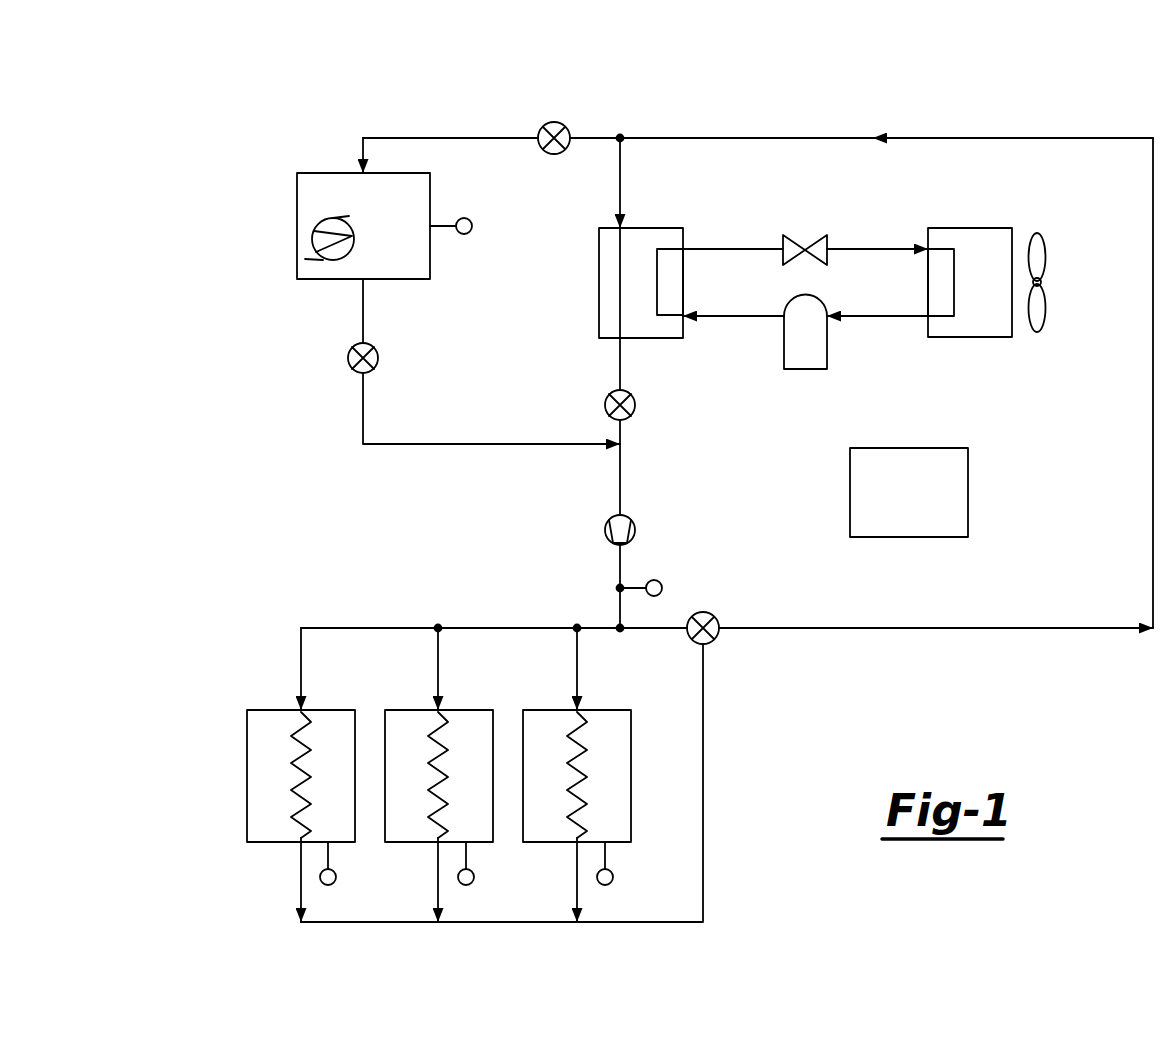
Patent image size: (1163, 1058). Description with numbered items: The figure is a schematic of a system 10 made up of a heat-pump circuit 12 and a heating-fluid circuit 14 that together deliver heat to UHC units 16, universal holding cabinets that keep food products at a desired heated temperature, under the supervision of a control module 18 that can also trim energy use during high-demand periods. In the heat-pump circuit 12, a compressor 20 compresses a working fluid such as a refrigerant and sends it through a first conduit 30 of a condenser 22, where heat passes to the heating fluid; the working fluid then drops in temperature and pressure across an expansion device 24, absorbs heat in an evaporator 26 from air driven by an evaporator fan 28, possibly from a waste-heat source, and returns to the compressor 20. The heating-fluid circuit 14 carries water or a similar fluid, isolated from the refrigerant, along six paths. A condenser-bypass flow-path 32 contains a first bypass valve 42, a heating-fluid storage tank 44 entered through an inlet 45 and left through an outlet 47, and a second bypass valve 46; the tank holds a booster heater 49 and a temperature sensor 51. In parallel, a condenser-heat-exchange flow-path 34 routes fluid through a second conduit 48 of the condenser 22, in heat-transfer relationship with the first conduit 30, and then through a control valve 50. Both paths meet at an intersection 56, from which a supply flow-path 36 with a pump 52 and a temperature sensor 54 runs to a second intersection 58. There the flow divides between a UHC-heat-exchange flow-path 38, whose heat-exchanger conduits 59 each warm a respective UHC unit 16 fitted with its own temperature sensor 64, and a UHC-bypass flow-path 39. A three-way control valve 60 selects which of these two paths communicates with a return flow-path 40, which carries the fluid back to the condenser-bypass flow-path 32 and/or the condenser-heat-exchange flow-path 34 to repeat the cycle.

The system 10 is at (305, 87).
The heat-pump circuit 12 is at (892, 347).
The heating-fluid circuit 14 is at (500, 122).
The UHC units 16 is at (247, 775).
The control module 18 is at (968, 492).
The compressor 20 is at (805, 369).
The condenser 22 is at (655, 228).
The expansion device 24 is at (800, 240).
The evaporator 26 is at (968, 228).
The evaporator fan 28 is at (1046, 305).
The first conduit 30 is at (657, 318).
The condenser-bypass flow-path 32 is at (443, 138).
The condenser-heat-exchange flow-path 34 is at (620, 182).
The supply flow-path 36 is at (620, 490).
The UHC-heat-exchange flow-path 38 is at (597, 628).
The UHC-bypass flow-path 39 is at (662, 630).
The return flow-path 40 is at (940, 628).
The first bypass valve 42 is at (553, 122).
The heating-fluid storage tank 44 is at (297, 192).
The inlet 45 is at (363, 172).
The second bypass valve 46 is at (348, 358).
The outlet 47 is at (372, 280).
The second conduit 48 is at (620, 284).
The booster heater 49 is at (312, 238).
The temperature sensor 51 is at (472, 228).
The control valve 50 is at (605, 402).
The pump 52 is at (605, 528).
The temperature sensor 54 is at (656, 580).
The intersection 56 is at (620, 444).
The intersection 58 is at (618, 636).
The heat-exchanger conduits 59 is at (300, 727).
The control valve 60 is at (712, 616).
The temperature sensor 64 is at (336, 878).